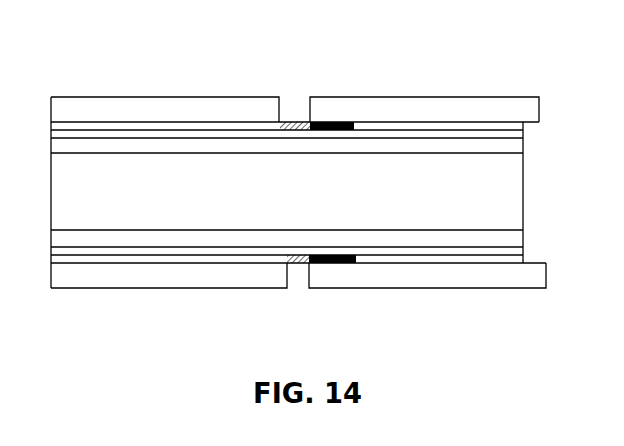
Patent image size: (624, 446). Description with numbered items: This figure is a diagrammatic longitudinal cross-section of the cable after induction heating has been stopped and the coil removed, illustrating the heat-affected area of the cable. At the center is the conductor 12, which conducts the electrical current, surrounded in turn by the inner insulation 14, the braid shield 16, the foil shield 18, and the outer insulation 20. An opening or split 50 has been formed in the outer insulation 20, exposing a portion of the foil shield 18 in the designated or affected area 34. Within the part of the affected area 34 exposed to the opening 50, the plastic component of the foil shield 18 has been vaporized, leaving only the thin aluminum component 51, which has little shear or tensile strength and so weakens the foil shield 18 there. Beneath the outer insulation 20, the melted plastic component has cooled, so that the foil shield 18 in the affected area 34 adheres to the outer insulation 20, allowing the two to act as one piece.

The conductor 12 is at (525, 197).
The inner insulation 14 is at (525, 147).
The braid shield 16 is at (525, 130).
The foil shield 18 is at (187, 127).
The outer insulation 20 is at (118, 97).
The designated or affected area 34 is at (327, 125).
The opening or split 50 is at (289, 87).
The aluminum component 51 is at (297, 127).